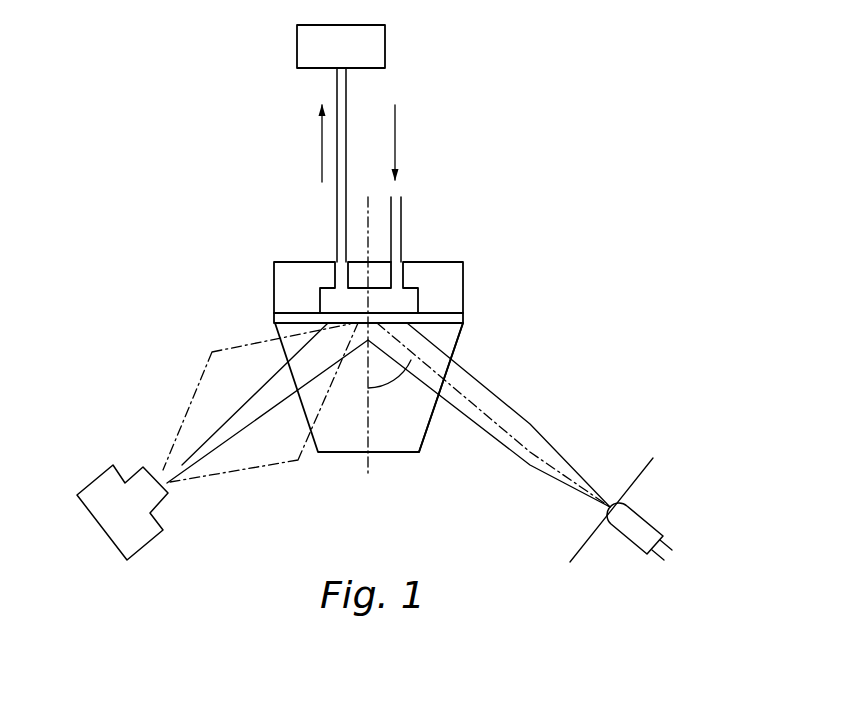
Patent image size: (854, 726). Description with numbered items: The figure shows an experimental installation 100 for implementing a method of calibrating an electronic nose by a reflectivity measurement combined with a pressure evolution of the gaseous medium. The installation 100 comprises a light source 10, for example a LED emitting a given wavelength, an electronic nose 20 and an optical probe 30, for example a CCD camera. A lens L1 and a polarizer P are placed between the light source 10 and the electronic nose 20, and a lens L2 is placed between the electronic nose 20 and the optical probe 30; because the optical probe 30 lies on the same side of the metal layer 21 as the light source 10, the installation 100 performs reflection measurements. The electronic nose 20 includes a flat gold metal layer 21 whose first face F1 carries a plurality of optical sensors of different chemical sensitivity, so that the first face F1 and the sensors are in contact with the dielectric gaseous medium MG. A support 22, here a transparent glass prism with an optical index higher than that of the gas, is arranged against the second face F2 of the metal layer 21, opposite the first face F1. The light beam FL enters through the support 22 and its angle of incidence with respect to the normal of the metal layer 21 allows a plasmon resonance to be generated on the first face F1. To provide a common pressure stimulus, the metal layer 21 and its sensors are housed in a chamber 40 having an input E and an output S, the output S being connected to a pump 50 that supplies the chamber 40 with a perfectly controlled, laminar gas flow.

The experimental installation 100 is at (153, 150).
The pump 50 is at (295, 45).
The chamber 40 is at (319, 300).
The metal layer 21 is at (466, 316).
The electronic nose 20 is at (435, 470).
The support 22 is at (408, 428).
The optical probe 30 is at (97, 533).
The light source 10 is at (654, 516).
The output S is at (322, 245).
The input E is at (415, 245).
The gaseous medium MG is at (398, 298).
The first face F1 is at (292, 311).
The second face F2 is at (452, 331).
The lens L1 is at (498, 507).
The lens L2 is at (298, 460).
The polarizer P is at (455, 436).
The light beam FL is at (588, 465).